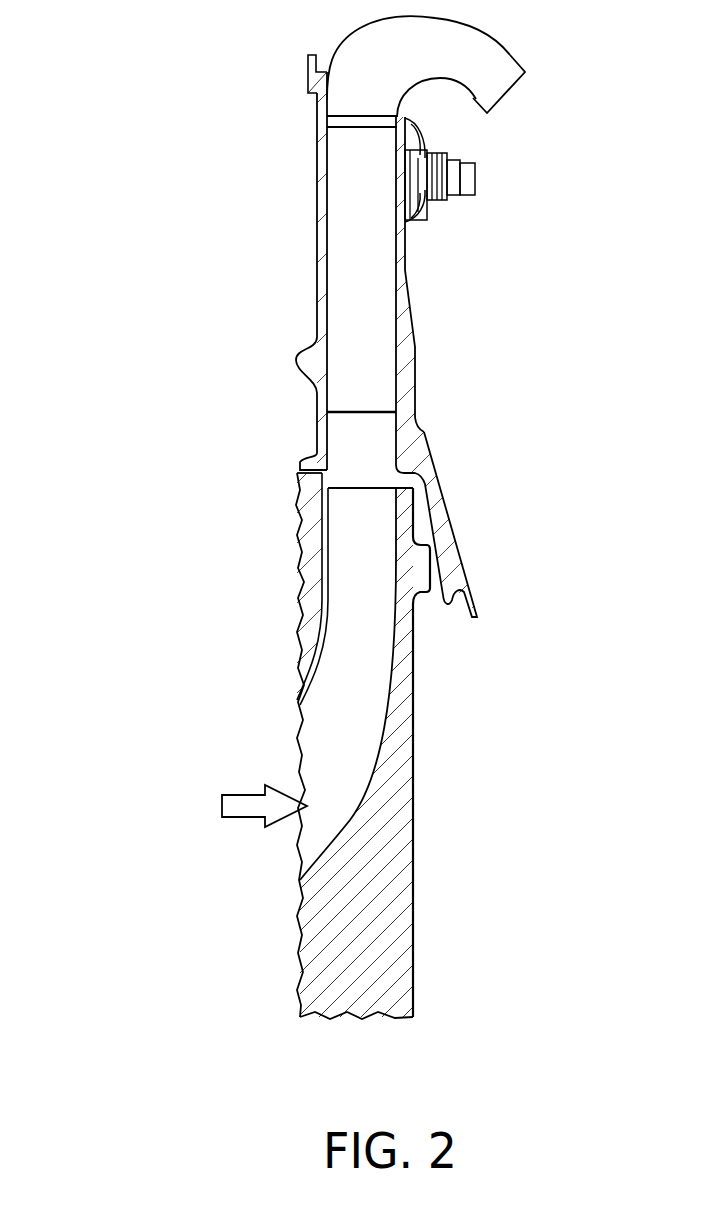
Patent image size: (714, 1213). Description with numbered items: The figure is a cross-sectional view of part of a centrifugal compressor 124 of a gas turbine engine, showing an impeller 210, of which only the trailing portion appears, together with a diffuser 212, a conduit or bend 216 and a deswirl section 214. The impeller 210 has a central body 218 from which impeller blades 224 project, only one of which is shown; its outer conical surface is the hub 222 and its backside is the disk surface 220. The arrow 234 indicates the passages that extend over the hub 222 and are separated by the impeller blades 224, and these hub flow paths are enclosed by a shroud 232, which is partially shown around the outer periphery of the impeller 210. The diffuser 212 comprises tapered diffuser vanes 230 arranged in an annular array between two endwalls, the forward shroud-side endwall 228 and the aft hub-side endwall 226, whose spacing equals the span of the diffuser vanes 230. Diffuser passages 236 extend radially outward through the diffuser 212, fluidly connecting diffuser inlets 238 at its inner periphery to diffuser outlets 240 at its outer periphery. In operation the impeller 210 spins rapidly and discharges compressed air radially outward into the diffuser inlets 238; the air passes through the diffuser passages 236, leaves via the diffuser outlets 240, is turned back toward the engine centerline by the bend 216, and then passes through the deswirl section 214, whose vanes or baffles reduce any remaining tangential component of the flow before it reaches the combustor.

The centrifugal compressor 124 is at (357, 517).
The impeller 210 is at (357, 746).
The diffuser 212 is at (357, 318).
The deswirl section 214 is at (497, 93).
The bend 216 is at (432, 64).
The central body 218 is at (382, 951).
The disk surface 220 is at (414, 877).
The hub 222 is at (362, 793).
The impeller blades 224 is at (343, 516).
The hub-side endwall 226 is at (417, 429).
The shroud-side endwall 228 is at (322, 316).
The diffuser vanes 230 is at (340, 362).
The shroud 232 is at (308, 578).
The arrow 234 is at (222, 806).
The diffuser passages 236 is at (382, 276).
The diffuser inlets 238 is at (383, 412).
The diffuser outlets 240 is at (343, 128).